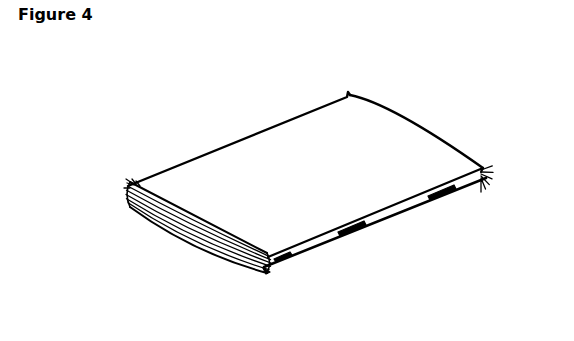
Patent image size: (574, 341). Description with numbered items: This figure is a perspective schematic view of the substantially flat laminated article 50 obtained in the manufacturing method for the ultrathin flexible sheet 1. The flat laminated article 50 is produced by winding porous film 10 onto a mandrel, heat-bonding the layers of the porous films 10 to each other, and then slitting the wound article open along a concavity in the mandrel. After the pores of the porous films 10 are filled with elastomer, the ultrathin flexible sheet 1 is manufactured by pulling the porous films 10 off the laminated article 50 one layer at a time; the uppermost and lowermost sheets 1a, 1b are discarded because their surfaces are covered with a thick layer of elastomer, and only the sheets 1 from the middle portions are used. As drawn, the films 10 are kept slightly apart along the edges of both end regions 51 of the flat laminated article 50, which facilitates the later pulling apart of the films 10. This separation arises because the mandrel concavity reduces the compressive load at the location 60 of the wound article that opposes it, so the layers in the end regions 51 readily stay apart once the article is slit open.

The ultrathin flexible sheet 1 is at (412, 204).
The uppermost sheet 1a is at (168, 186).
The lowermost sheet 1b is at (268, 271).
The porous film 10 is at (326, 242).
The flat laminated article 50 is at (249, 132).
The end regions 51 is at (406, 103).
The location opposing the concavity 60 is at (455, 131).